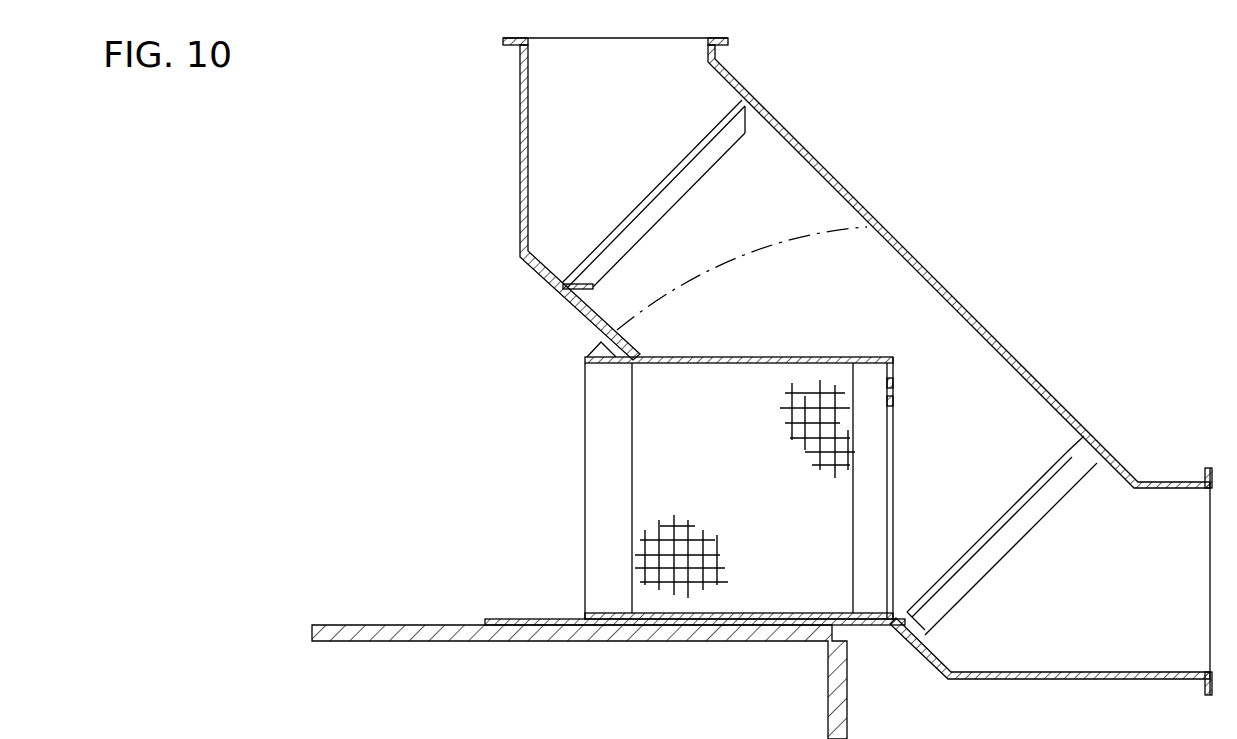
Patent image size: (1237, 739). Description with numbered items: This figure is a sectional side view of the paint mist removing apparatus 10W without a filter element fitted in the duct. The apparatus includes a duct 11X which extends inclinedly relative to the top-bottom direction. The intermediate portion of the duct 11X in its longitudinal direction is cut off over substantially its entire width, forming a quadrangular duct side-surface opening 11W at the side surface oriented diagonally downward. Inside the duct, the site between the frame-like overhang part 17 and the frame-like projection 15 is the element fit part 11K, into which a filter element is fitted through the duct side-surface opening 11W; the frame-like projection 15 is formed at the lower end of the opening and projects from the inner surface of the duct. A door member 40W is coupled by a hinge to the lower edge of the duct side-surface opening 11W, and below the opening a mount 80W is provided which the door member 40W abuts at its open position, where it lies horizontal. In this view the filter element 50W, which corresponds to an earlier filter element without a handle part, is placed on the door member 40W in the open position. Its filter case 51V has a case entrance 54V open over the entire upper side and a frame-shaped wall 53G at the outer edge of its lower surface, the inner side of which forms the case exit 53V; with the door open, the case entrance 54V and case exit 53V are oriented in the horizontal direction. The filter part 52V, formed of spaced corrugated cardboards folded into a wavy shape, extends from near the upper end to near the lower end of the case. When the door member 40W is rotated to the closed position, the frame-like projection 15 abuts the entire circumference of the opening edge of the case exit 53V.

The paint mist removing apparatus 10W is at (1133, 170).
The duct 11X is at (810, 144).
The element fit part 11K is at (883, 292).
The duct side-surface opening 11W is at (598, 337).
The frame-like overhang part 17 is at (750, 125).
The frame-like projection 15 is at (1063, 448).
The filter element 50W is at (582, 461).
The filter case 51V is at (790, 356).
The filter part 52V is at (692, 575).
The case exit 53V is at (890, 404).
The frame-shaped wall 53G is at (889, 380).
The case entrance 54V is at (585, 365).
The door member 40W is at (518, 617).
The mount 80W is at (848, 700).